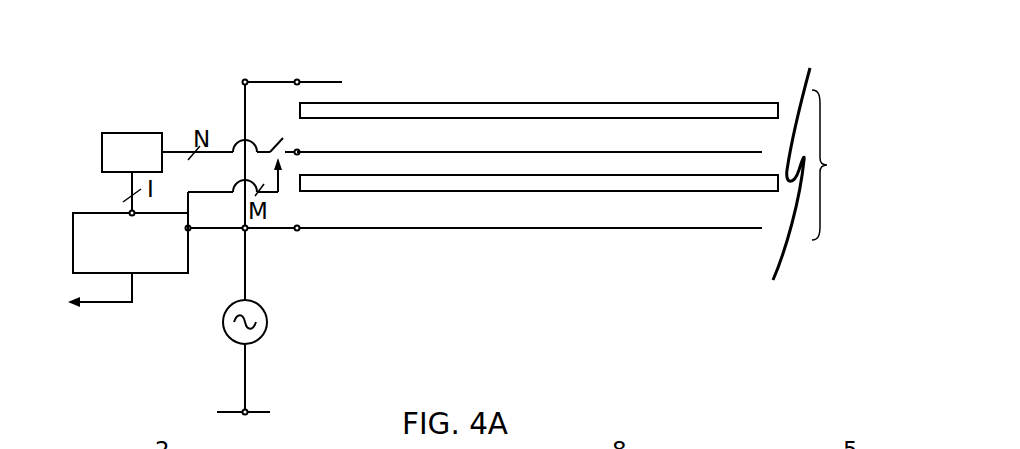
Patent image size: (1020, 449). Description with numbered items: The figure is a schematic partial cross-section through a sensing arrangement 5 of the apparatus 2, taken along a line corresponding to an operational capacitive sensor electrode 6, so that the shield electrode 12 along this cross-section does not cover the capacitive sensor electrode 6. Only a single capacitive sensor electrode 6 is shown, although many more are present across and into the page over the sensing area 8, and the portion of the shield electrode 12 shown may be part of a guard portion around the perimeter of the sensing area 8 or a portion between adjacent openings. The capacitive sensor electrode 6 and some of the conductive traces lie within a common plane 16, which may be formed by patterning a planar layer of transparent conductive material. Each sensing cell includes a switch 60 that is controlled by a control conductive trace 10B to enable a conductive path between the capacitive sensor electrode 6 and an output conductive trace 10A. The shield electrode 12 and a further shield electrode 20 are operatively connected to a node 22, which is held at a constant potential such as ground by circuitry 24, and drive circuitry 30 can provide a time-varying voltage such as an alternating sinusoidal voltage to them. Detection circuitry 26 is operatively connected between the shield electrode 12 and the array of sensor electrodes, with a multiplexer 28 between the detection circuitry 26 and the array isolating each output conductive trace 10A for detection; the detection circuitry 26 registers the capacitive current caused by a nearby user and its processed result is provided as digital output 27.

The apparatus 2 is at (187, 60).
The sensing arrangement 5 is at (822, 47).
The capacitive sensor electrode 6 is at (447, 152).
The sensing area 8 is at (592, 75).
The output conductive trace 10A is at (238, 143).
The control conductive trace 10B is at (215, 195).
The shield electrode 12 is at (327, 80).
The common plane 16 is at (836, 165).
The further shield electrode 20 is at (323, 230).
The node 22 is at (248, 410).
The circuitry 24 is at (217, 412).
The detection circuitry 26 is at (85, 213).
The digital output 27 is at (100, 303).
The multiplexer 28 is at (133, 133).
The drive circuitry 30 is at (267, 322).
The switch 60 is at (283, 138).